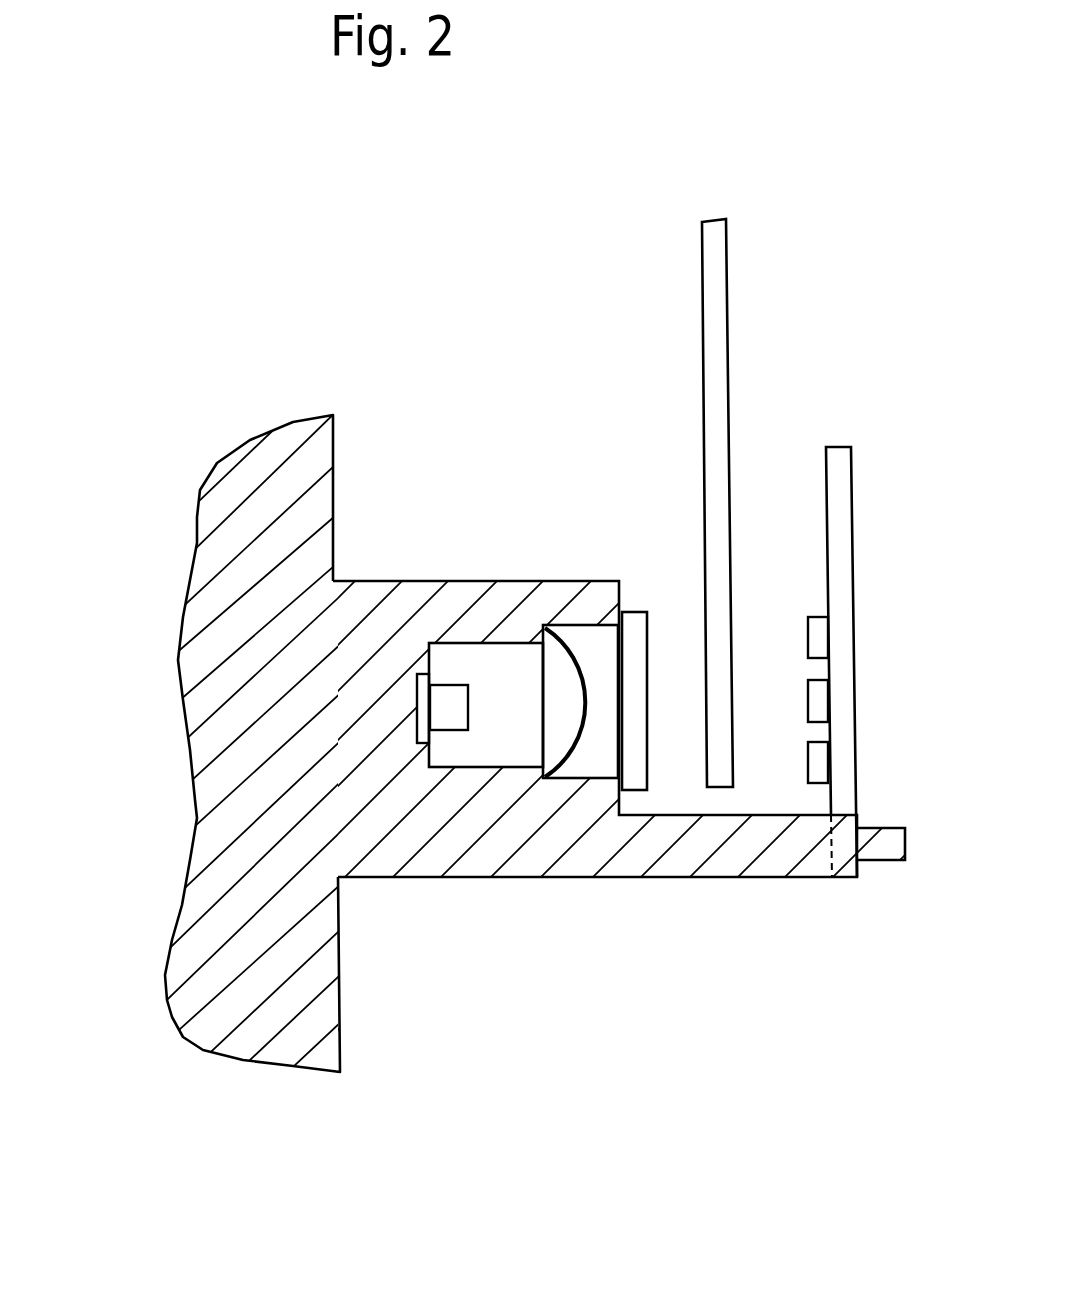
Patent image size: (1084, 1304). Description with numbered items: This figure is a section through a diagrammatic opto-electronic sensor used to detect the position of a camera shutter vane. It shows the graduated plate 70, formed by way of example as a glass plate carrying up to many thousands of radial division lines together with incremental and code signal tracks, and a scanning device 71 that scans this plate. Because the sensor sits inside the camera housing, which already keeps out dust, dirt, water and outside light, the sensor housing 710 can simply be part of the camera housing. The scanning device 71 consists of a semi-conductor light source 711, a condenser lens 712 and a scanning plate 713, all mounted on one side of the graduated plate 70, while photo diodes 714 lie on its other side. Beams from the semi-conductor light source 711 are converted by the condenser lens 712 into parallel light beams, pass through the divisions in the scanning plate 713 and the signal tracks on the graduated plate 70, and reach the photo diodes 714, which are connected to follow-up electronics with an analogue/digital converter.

The graduated plate 70 is at (717, 347).
The scanning device 71 is at (580, 985).
The sensor housing 710 is at (193, 960).
The semi-conductor light source 711 is at (415, 709).
The condenser lens 712 is at (563, 678).
The scanning plate 713 is at (633, 628).
The photo diodes 714 is at (815, 652).